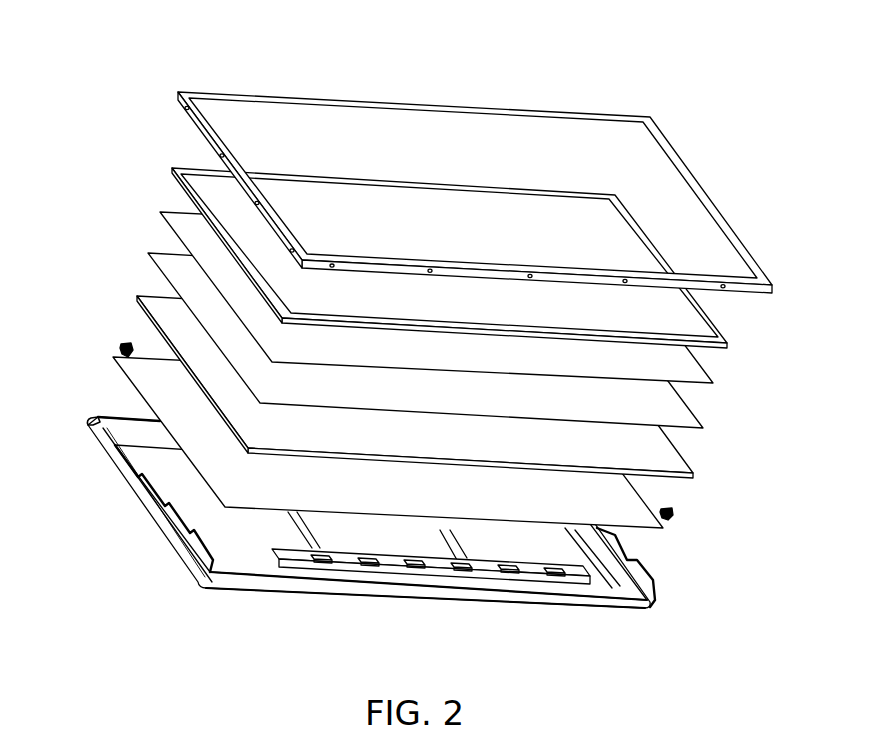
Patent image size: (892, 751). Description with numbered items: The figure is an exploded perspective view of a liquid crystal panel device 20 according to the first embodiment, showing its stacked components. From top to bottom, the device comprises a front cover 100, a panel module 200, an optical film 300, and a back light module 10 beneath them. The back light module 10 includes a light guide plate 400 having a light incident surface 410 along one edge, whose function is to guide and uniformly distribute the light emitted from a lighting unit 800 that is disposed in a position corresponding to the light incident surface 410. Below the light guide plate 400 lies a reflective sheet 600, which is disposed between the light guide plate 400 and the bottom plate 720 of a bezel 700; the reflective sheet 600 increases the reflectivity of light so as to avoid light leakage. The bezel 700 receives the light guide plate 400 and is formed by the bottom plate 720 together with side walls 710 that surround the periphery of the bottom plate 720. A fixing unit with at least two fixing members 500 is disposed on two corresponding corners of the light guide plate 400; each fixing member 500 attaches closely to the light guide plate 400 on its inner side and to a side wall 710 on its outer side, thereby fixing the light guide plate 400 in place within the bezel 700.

The liquid crystal panel device 20 is at (137, 48).
The back light module 10 is at (429, 452).
The front cover 100 is at (731, 232).
The panel module 200 is at (712, 322).
The optical film 300 is at (463, 340).
The light guide plate 400 is at (457, 397).
The light incident surface 410 is at (662, 473).
The fixing member 500 is at (123, 343).
The reflective sheet 600 is at (640, 522).
The bezel 700 is at (650, 590).
The side wall 710 is at (130, 413).
The bottom plate 720 is at (92, 422).
The lighting unit 800 is at (560, 593).